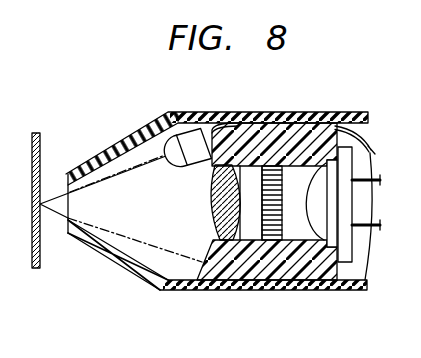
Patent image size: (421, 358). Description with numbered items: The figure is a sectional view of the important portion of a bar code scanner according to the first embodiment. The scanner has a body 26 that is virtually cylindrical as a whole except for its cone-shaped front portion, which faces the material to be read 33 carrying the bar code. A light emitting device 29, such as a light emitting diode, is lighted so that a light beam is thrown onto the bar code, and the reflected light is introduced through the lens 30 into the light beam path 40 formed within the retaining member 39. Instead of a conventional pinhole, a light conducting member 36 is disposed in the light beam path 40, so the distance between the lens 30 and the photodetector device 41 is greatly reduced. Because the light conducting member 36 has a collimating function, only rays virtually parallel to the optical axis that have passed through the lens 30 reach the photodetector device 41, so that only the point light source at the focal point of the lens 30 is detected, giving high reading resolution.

The body 26 is at (141, 130).
The light emitting device 29 is at (182, 136).
The lens 30 is at (237, 217).
The material to be read 33 is at (39, 150).
The light conducting member 36 is at (273, 224).
The retaining member 39 is at (297, 133).
The light beam path 40 is at (250, 172).
The photodetector device 41 is at (316, 218).